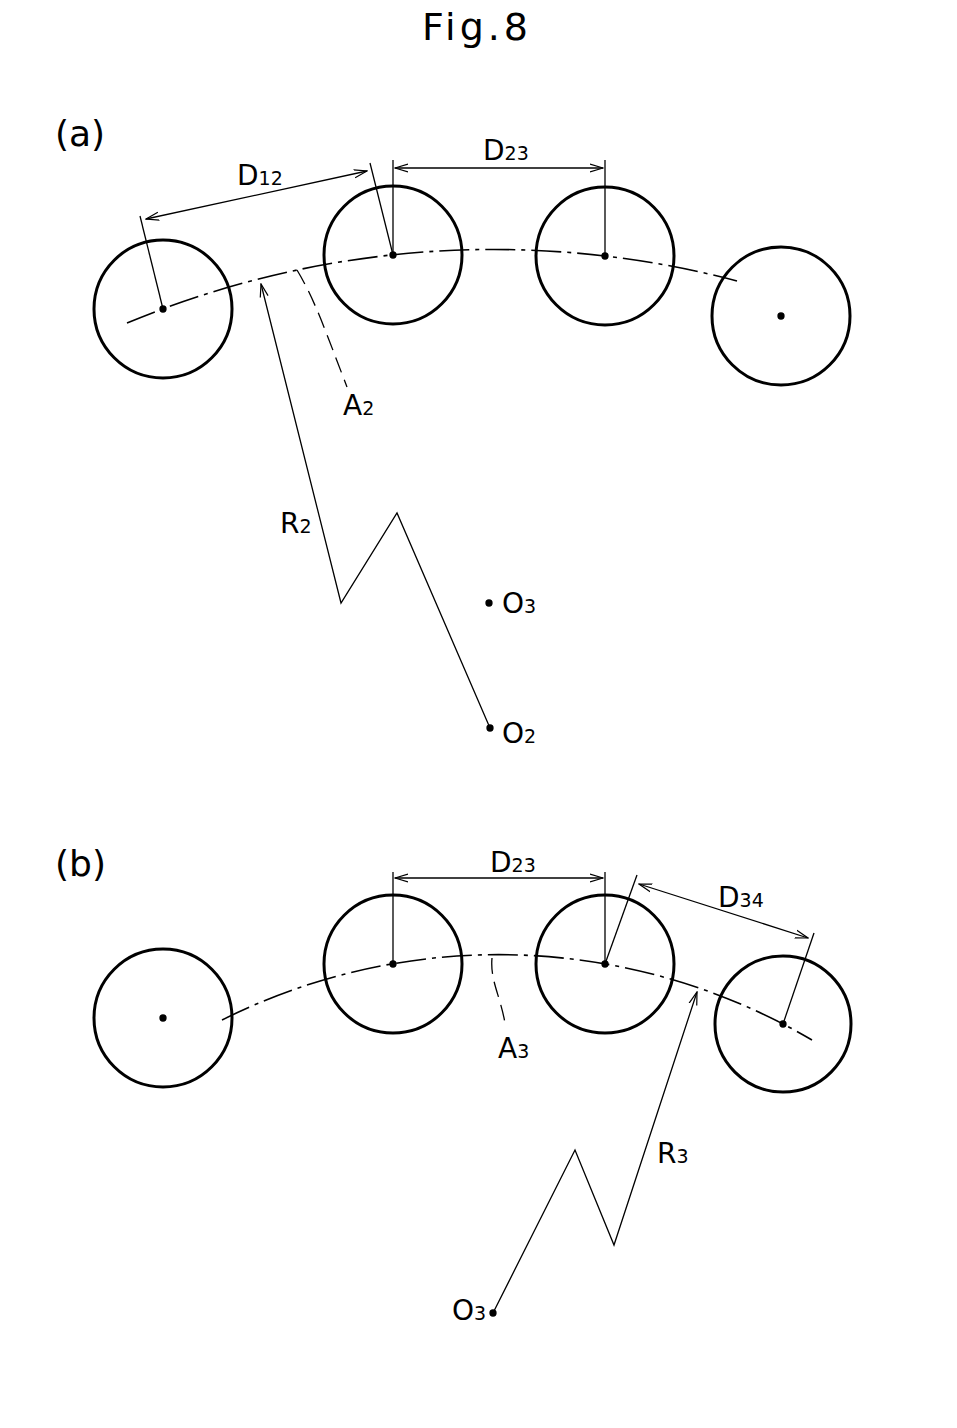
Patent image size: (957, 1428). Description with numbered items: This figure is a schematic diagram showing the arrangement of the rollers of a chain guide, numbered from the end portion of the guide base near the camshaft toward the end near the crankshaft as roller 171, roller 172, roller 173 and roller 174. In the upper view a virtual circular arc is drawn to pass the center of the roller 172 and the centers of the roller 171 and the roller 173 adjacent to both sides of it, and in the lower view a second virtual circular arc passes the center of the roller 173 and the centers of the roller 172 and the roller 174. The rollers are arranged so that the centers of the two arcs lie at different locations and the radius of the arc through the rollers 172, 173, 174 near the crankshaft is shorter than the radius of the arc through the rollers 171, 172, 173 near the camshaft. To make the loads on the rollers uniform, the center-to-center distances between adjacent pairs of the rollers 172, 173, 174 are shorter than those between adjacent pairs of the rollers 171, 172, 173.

The roller 171 is at (147, 377).
The roller 172 is at (433, 316).
The roller 173 is at (600, 325).
The roller 174 is at (777, 385).